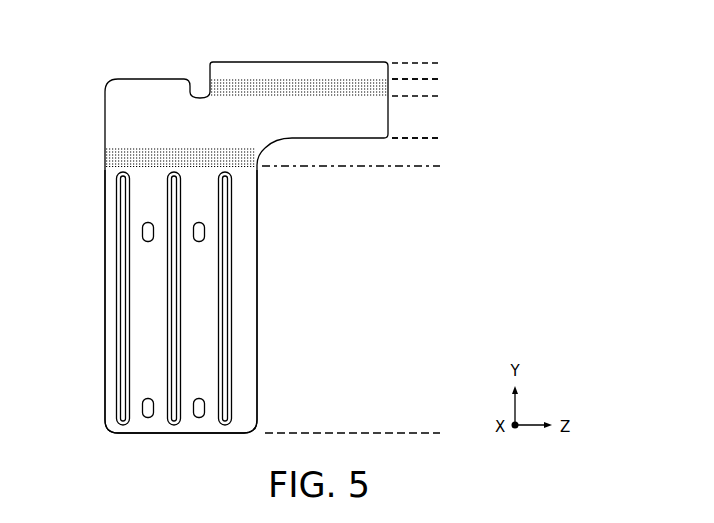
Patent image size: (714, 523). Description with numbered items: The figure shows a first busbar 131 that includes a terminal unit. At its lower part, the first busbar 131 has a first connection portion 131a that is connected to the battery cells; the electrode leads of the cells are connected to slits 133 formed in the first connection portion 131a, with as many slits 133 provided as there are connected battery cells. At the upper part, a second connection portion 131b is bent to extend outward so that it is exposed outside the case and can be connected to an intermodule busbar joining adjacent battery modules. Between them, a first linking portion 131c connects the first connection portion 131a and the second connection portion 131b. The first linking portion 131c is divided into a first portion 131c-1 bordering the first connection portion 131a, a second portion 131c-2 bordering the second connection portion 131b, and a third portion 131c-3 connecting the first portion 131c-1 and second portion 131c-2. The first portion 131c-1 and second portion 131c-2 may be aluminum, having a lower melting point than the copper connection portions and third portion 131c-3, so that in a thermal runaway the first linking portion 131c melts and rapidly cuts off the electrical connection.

The first busbar 131 is at (130, 52).
The first connection portion 131a is at (447, 166).
The second connection portion 131b is at (447, 63).
The first linking portion 131c is at (537, 80).
The first portion 131c-1 is at (447, 138).
The second portion 131c-2 is at (447, 79).
The third portion 131c-3 is at (447, 96).
The slit 133 is at (120, 288).